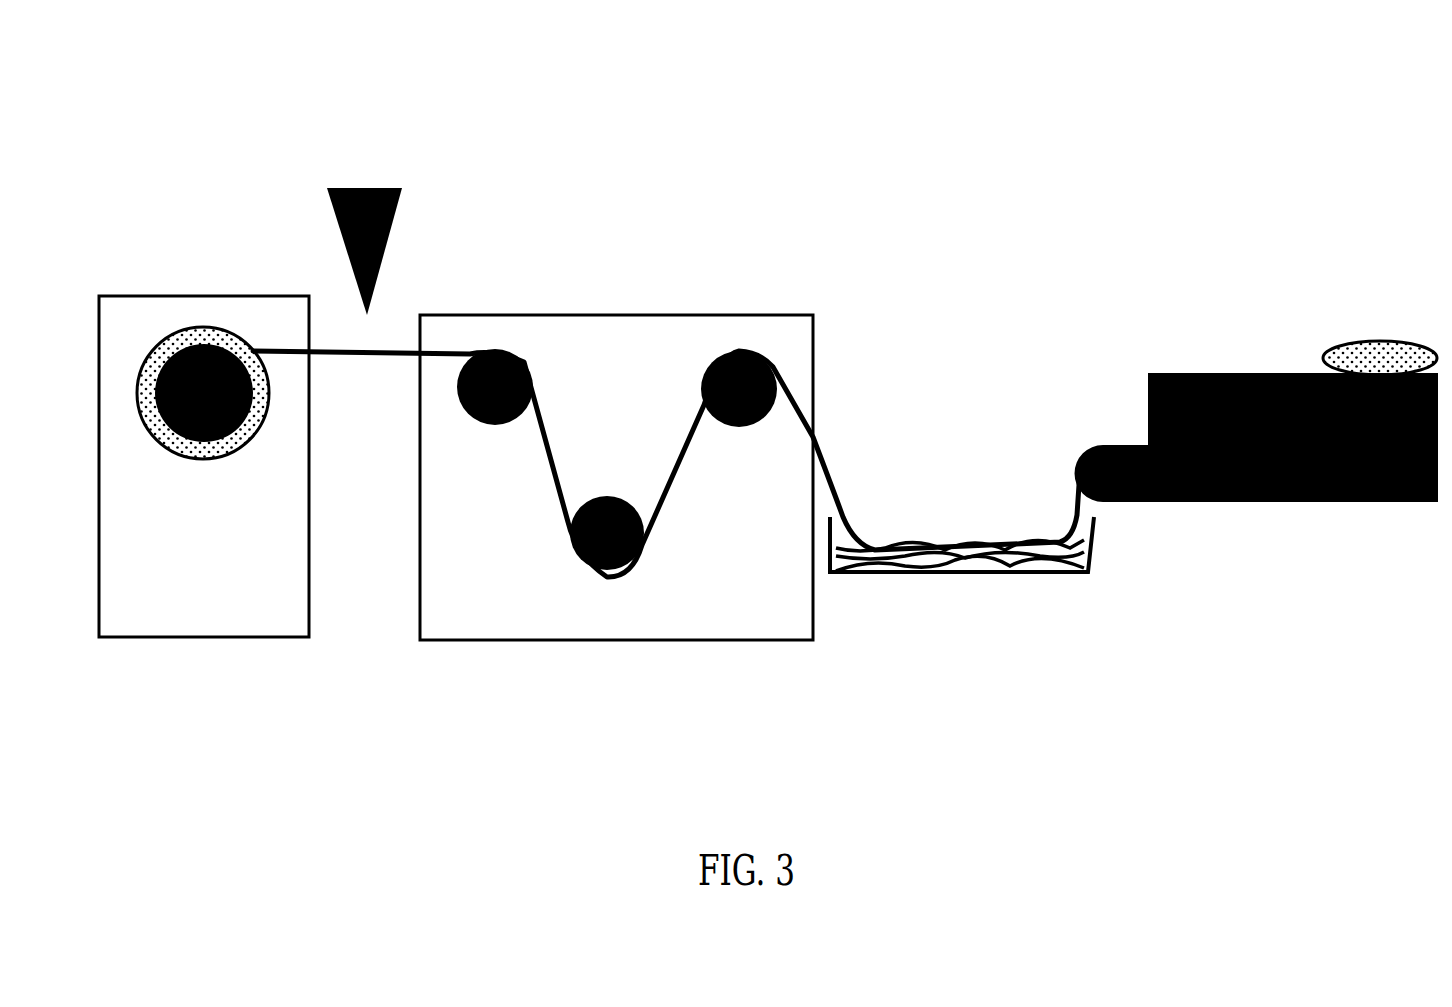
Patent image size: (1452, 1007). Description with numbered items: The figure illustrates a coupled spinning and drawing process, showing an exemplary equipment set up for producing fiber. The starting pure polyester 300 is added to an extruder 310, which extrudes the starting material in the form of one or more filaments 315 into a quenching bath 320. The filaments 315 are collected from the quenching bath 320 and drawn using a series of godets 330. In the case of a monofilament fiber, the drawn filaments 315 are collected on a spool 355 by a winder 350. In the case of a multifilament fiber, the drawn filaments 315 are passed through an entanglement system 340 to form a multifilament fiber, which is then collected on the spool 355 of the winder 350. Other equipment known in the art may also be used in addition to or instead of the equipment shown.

The starting pure polyester 300 is at (1398, 323).
The extruder 310 is at (1257, 373).
The filaments 315 is at (1059, 472).
The quenching bath 320 is at (943, 572).
The godets 330 is at (607, 313).
The entanglement system 340 is at (367, 187).
The winder 350 is at (195, 637).
The spool 355 is at (207, 351).